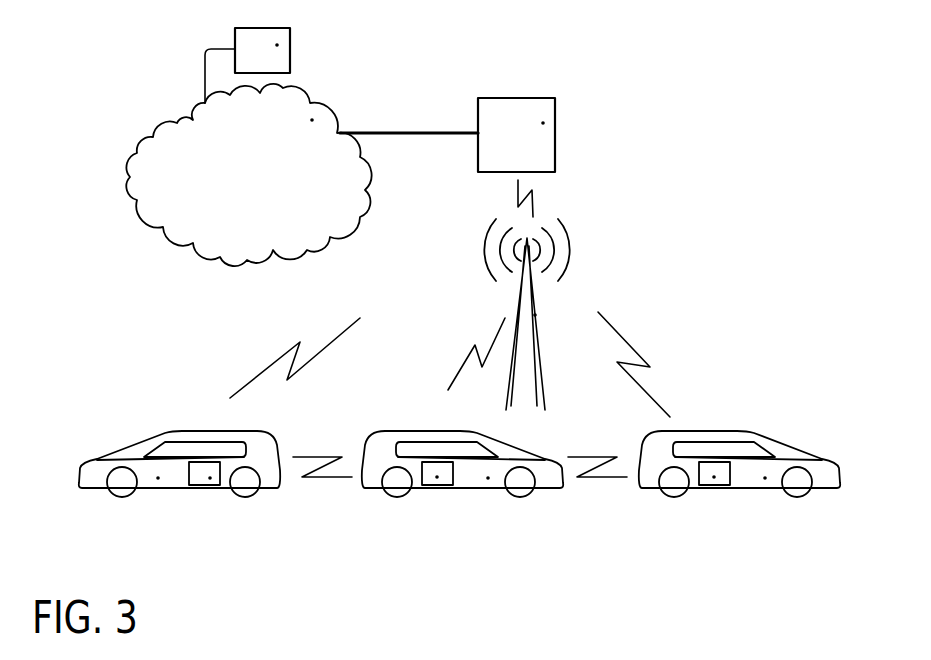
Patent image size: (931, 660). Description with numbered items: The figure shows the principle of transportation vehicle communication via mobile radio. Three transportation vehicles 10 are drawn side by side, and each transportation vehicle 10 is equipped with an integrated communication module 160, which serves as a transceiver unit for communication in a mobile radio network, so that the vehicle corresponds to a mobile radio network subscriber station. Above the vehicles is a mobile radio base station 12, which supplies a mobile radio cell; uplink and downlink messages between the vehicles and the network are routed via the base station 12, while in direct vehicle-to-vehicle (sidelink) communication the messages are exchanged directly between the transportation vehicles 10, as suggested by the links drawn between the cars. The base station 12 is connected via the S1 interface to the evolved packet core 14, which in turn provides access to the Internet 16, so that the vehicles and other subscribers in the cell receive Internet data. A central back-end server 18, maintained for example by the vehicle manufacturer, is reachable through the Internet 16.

The transportation vehicle 10 is at (777, 533).
The mobile radio base station 12 is at (540, 312).
The evolved packet core (EPC) 14 is at (555, 118).
The Internet 16 is at (320, 113).
The central back-end server 18 is at (288, 42).
The communication module 160 is at (225, 533).